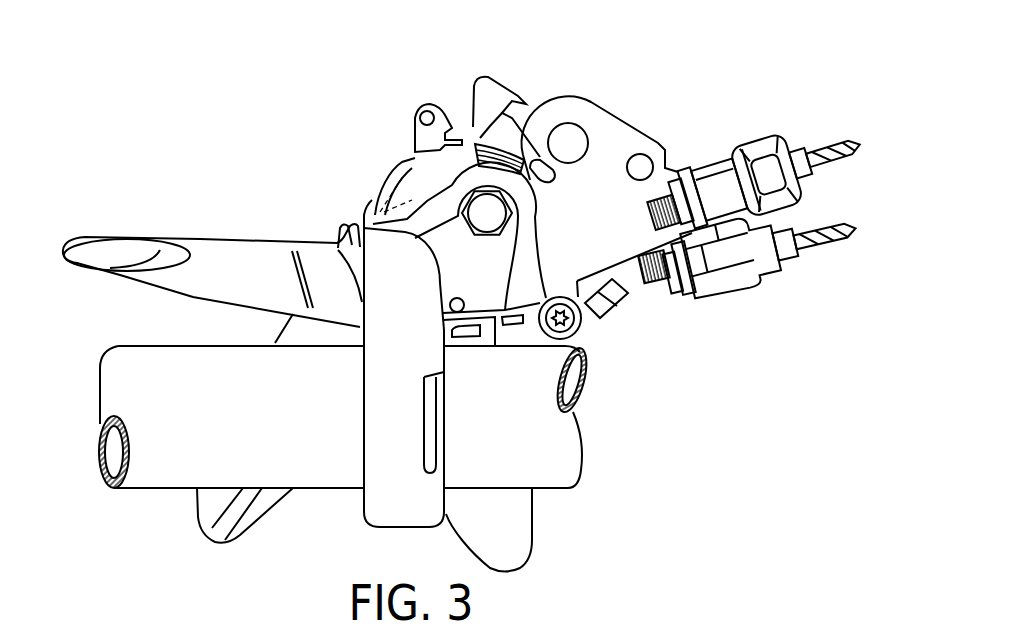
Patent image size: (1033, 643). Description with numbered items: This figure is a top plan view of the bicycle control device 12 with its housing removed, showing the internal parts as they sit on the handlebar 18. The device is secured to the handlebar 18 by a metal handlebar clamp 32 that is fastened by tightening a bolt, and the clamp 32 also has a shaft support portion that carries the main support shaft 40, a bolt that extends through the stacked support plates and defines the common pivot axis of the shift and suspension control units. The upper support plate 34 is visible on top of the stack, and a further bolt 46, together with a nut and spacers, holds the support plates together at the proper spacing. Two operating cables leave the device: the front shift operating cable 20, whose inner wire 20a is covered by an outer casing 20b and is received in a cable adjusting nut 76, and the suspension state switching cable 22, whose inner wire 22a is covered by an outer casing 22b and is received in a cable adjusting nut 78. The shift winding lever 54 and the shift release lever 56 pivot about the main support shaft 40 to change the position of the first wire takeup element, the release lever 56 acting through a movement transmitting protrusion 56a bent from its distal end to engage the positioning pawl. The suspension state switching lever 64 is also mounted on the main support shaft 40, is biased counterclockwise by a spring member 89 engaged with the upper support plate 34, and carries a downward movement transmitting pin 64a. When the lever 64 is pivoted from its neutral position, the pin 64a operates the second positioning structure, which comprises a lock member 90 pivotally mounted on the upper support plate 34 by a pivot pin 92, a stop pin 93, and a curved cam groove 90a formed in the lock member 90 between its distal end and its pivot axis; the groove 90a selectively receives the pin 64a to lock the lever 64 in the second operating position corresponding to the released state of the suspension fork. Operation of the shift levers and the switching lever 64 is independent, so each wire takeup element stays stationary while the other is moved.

The bicycle control device 12 is at (634, 148).
The handlebar 18 is at (562, 491).
The front shift operating cable 20 is at (751, 138).
The inner wire 20a is at (834, 113).
The outer casing 20b is at (806, 155).
The suspension state switching cable 22 is at (751, 303).
The inner wire 22a is at (830, 232).
The outer casing 22b is at (786, 244).
The handlebar clamp 32 is at (362, 512).
The upper support plate 34 is at (613, 118).
The main support shaft 40 is at (477, 210).
The bolt 46 is at (578, 330).
The shift winding lever 54 is at (200, 555).
The shift release lever 56 is at (188, 224).
The movement transmitting protrusion 56a is at (626, 288).
The suspension state switching lever 64 is at (553, 545).
The movement transmitting pin 64a is at (415, 115).
The cable adjusting nut 76 is at (723, 309).
The cable adjusting nut 78 is at (709, 160).
The spring member 89 is at (472, 112).
The lock member 90 is at (450, 77).
The curved cam groove 90a is at (522, 107).
The pivot pin 92 is at (570, 140).
The stop pin 93 is at (640, 165).